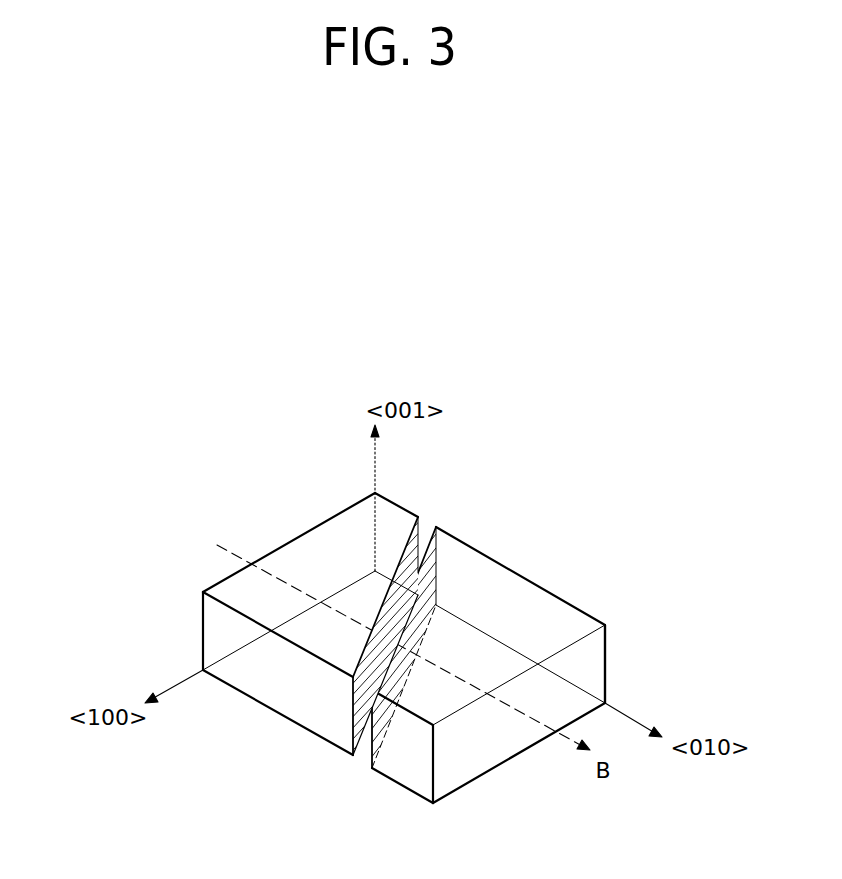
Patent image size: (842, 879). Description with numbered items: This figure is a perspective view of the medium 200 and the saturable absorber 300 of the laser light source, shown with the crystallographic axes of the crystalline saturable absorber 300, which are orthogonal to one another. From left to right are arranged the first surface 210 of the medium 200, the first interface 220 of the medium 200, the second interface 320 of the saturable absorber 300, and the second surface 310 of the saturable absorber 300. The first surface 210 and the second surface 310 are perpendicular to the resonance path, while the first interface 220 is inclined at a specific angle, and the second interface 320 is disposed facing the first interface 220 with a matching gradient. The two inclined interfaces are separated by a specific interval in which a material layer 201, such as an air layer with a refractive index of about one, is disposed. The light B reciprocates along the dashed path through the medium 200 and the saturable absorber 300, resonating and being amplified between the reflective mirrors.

The medium 200 is at (393, 517).
The material layer 201 is at (365, 753).
The first surface 210 is at (203, 617).
The first interface 220 is at (353, 718).
The saturable absorber 300 is at (533, 605).
The second surface 310 is at (590, 663).
The second interface 320 is at (383, 738).